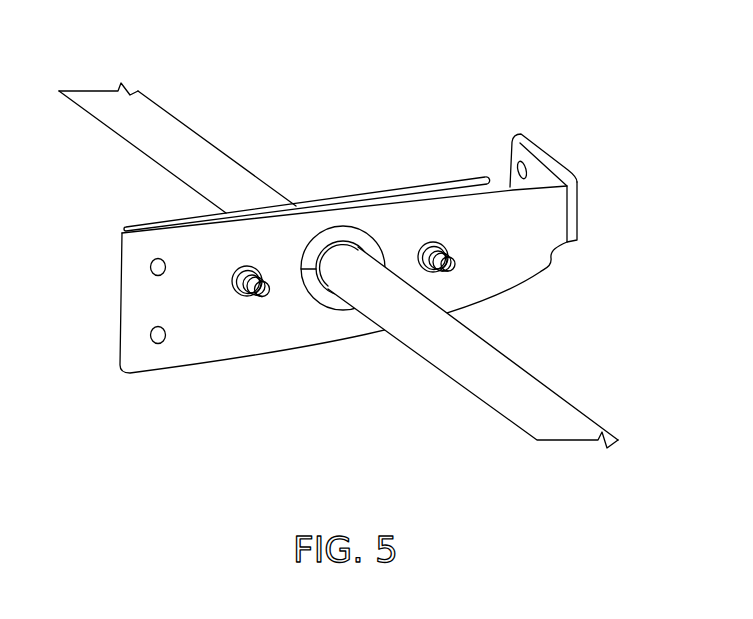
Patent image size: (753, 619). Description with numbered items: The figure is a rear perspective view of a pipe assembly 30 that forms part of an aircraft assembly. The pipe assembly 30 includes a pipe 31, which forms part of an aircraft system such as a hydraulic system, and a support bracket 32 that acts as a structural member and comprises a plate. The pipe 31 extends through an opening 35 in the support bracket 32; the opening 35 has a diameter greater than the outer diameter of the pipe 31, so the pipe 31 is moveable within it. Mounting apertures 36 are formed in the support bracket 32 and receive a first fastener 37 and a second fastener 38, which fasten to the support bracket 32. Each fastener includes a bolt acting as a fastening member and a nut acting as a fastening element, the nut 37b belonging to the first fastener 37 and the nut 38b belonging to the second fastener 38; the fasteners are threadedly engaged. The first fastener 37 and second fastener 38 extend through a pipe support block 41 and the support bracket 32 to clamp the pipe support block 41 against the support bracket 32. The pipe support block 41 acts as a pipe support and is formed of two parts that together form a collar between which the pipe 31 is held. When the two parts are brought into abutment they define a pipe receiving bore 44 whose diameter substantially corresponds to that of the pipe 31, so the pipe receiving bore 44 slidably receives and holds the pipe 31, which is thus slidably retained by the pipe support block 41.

The pipe assembly 30 is at (338, 230).
The pipe 31 is at (515, 380).
The support bracket 32 is at (225, 352).
The opening 35 is at (355, 235).
The mounting apertures 36 is at (242, 302).
The first fastener 37 is at (453, 268).
The nut 37b is at (437, 240).
The second fastener 38 is at (263, 300).
The nut 38b is at (150, 232).
The pipe support block 41 is at (325, 237).
The pipe receiving bore 44 is at (330, 303).